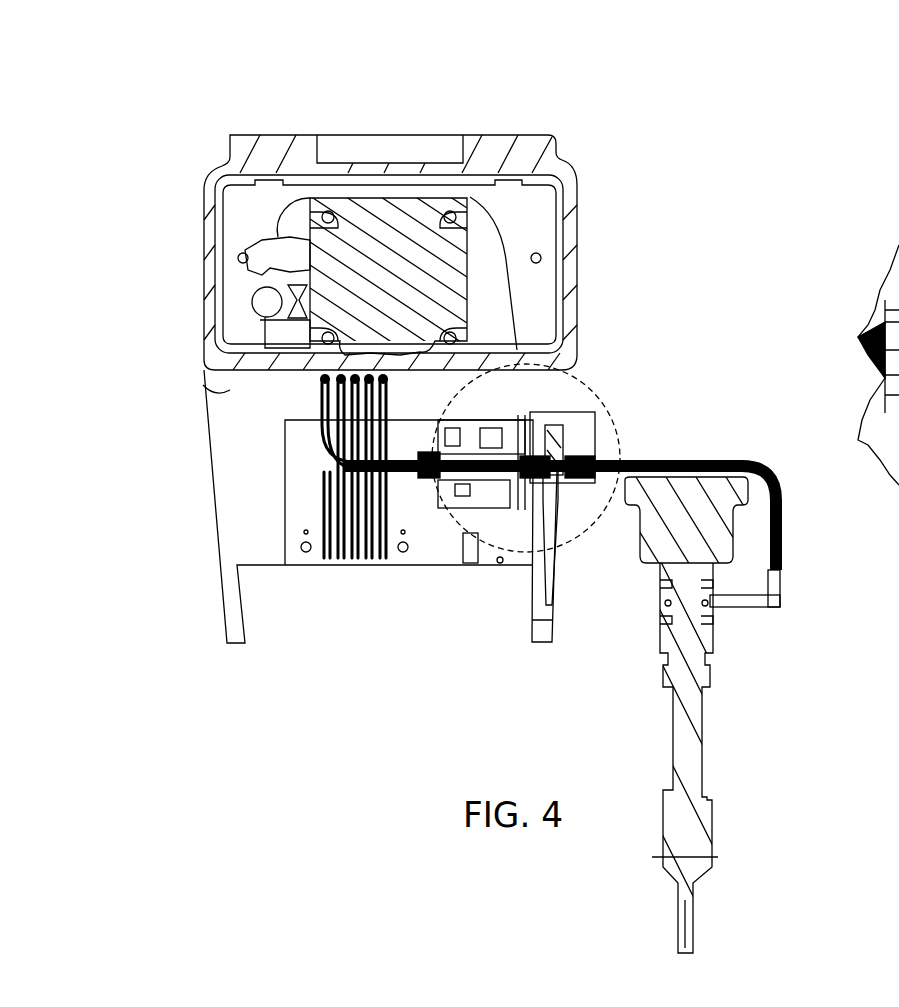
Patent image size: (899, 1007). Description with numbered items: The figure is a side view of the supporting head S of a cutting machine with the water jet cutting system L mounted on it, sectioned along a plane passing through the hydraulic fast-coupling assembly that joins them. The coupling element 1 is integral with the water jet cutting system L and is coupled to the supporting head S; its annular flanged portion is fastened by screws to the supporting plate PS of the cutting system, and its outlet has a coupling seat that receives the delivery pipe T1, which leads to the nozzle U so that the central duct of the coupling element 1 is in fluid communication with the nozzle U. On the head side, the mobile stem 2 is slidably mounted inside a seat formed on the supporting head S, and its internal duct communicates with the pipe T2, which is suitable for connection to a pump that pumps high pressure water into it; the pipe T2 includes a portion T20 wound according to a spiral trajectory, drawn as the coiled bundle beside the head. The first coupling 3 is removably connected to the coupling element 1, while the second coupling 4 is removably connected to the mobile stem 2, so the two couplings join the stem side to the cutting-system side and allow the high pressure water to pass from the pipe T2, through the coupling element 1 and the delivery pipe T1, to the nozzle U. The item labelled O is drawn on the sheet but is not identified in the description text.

The supporting head S is at (590, 190).
The portion wound according to a spiral trajectory T20 is at (393, 573).
The pipe T2 is at (410, 486).
The mobile stem 2 is at (462, 418).
The first coupling 3 is at (540, 450).
The second coupling 4 is at (515, 447).
The coupling element 1 is at (600, 450).
The delivery pipe T1 is at (612, 450).
The optical cable O is at (618, 460).
The water jet cutting system L is at (784, 517).
The supporting plate PS is at (553, 542).
The nozzle U is at (700, 942).